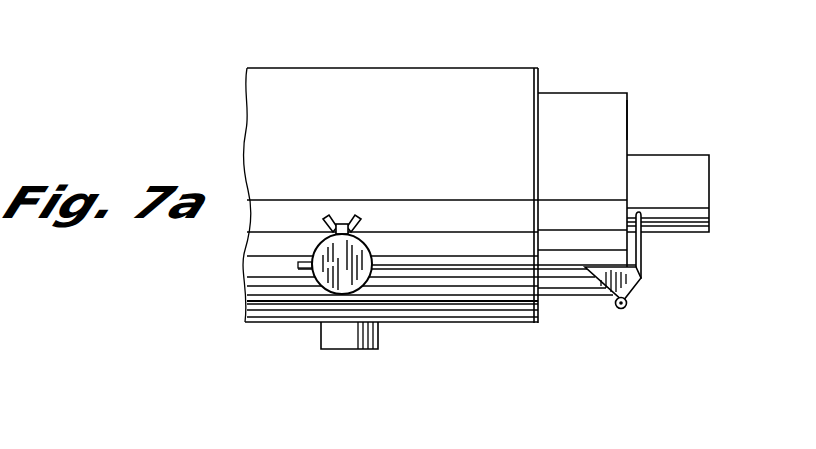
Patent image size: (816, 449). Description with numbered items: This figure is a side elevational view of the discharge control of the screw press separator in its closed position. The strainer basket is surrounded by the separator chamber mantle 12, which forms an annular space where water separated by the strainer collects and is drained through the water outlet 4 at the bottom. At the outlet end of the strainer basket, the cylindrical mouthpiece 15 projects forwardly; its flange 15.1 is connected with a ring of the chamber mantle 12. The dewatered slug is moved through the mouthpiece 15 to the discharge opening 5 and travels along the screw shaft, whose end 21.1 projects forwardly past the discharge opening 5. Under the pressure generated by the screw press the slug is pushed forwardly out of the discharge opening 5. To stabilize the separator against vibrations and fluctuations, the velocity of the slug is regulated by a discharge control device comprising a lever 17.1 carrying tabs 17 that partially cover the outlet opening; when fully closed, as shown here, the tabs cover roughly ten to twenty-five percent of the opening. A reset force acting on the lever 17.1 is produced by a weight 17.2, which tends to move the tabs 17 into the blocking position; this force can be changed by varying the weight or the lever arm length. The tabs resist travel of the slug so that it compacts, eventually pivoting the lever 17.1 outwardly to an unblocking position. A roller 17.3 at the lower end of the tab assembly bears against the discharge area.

The separator chamber mantle 12 is at (276, 67).
The flange of the cylindrical mouthpiece 15.1 is at (542, 82).
The cylindrical mouthpiece 15 is at (612, 90).
The discharge opening 5 is at (634, 117).
The end of the screw shaft 21.1 is at (693, 155).
The tabs 17 is at (641, 248).
The lever 17.1 is at (465, 268).
The weight 17.2 is at (313, 248).
The roller 17.3 is at (625, 308).
The water outlet 4 is at (349, 349).